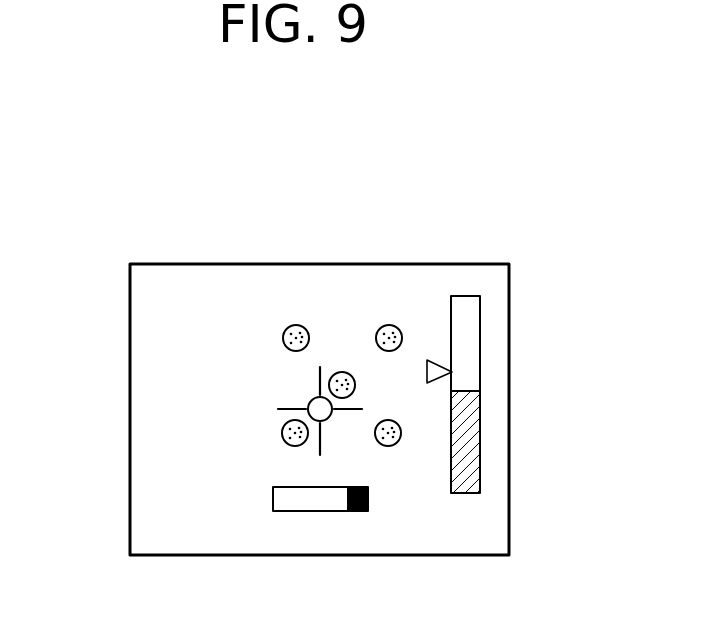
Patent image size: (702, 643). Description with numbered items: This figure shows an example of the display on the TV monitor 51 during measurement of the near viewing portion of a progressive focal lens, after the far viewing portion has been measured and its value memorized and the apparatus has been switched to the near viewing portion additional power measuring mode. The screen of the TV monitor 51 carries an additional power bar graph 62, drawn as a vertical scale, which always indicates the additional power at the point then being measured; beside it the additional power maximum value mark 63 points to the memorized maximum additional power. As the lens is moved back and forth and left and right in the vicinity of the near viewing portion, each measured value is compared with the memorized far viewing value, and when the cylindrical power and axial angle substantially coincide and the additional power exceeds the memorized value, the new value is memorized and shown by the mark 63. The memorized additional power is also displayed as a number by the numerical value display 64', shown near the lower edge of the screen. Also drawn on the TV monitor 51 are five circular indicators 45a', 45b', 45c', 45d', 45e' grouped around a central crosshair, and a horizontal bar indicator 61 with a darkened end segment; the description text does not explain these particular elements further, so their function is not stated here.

The TV monitor 51 is at (182, 558).
The fixation target indicator (center) 45a' is at (346, 302).
The fixation target indicator (upper right) 45b' is at (424, 278).
The fixation target indicator (lower right) 45c' is at (486, 484).
The fixation target indicator (lower left) 45d' is at (172, 459).
The fixation target indicator (upper left) 45e' is at (254, 279).
The bar indicator 61 is at (313, 512).
The additional power bar graph 62 is at (465, 297).
The additional power maximum value mark 63 is at (452, 372).
The numerical value display 64' is at (415, 575).